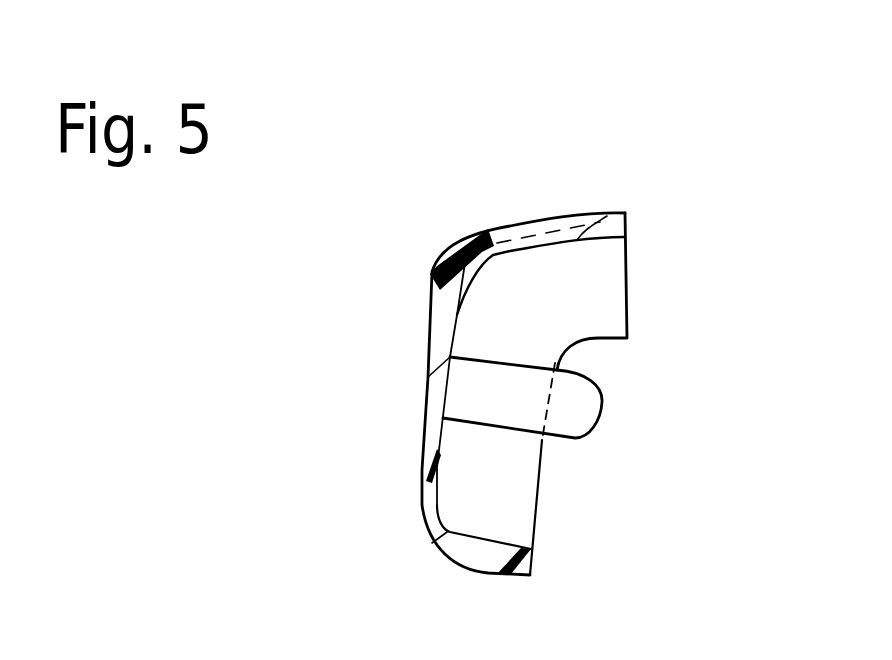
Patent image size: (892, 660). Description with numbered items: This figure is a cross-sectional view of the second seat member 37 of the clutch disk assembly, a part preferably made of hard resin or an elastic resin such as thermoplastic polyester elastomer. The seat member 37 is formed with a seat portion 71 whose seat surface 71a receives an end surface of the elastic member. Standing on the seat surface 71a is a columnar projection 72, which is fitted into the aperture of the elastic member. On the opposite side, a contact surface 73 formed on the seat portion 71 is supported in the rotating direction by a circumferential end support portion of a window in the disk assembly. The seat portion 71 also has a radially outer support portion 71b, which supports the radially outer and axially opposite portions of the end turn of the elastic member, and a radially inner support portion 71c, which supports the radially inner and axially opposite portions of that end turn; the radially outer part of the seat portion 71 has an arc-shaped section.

The seat member 37 is at (690, 190).
The seat portion 71 is at (438, 318).
The seat surface 71a is at (492, 230).
The radially outer support portion 71b is at (604, 215).
The radially inner support portion 71c is at (488, 575).
The columnar projection 72 is at (585, 403).
The contact surface 73 is at (423, 447).